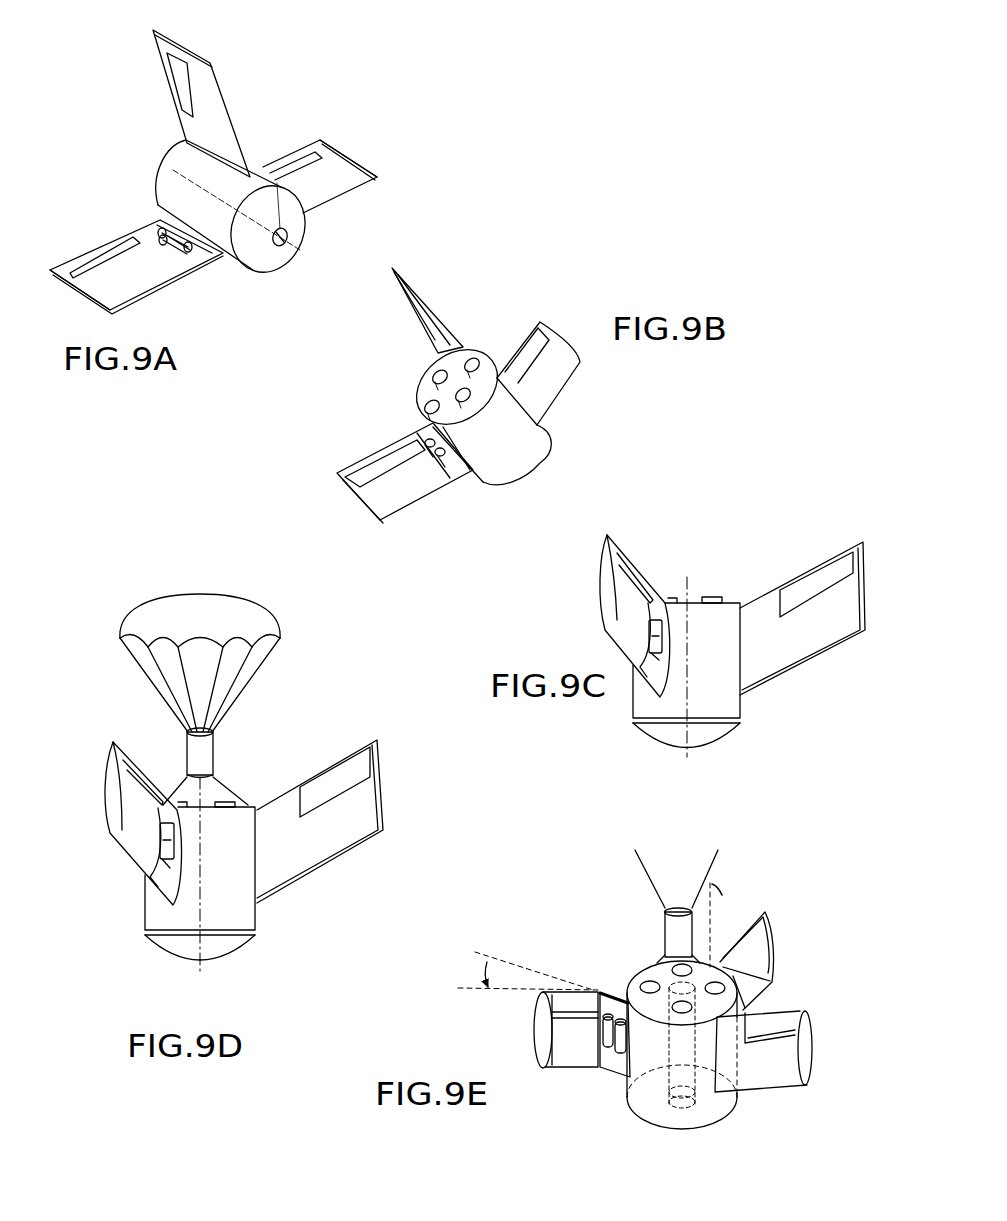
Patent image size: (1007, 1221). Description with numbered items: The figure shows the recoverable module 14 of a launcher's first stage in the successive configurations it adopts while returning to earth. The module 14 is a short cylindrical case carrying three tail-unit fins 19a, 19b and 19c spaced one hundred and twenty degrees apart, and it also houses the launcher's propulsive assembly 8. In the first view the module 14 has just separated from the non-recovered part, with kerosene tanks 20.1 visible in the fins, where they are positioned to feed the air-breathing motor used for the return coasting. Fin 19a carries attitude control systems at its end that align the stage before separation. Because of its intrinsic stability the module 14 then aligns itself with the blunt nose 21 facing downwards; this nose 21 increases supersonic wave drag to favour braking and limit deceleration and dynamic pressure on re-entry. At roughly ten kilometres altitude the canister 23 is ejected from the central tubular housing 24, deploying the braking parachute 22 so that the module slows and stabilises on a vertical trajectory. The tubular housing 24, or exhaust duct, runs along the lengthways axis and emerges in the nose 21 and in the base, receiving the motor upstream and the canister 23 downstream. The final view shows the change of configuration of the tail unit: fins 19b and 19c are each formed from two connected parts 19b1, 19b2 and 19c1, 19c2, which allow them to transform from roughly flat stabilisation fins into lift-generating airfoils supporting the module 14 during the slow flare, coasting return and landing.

In FIG. 9A, the module 14 is at (130, 80).
In FIG. 9B, the module 14 is at (563, 307).
In FIG. 9C, the module 14 is at (753, 542).
In FIG. 9D, the module 14 is at (110, 958).
In FIG. 9E, the module 14 is at (540, 1143).
In FIG. 9A, the fin 19a is at (237, 98).
In FIG. 9B, the fin 19a is at (557, 388).
In FIG. 9C, the fin 19a is at (867, 603).
In FIG. 9D, the fin 19a is at (363, 818).
In FIG. 9E, the fin 19a is at (787, 1078).
In FIG. 9A, the fin 19b is at (373, 163).
In FIG. 9B, the fin 19b is at (447, 297).
In FIG. 9A, the fin 19c is at (97, 233).
In FIG. 9B, the fin 19c is at (370, 445).
In FIG. 9C, the fin 19c is at (637, 557).
In FIG. 9D, the fin 19c is at (110, 735).
In FIG. 9A, the tanks 20.1 is at (197, 243).
In FIG. 9C, the nose 21 is at (703, 733).
In FIG. 9D, the nose 21 is at (218, 948).
In FIG. 9D, the braking parachute 22 is at (165, 615).
In FIG. 9D, the canister 23 is at (205, 752).
In FIG. 9E, the canister 23 is at (670, 938).
In FIG. 9E, the tubular housing 24 is at (693, 1098).
In FIG. 9E, the propulsive assembly 8 is at (647, 983).
In FIG. 9E, the connected part 19b1 is at (723, 967).
In FIG. 9E, the connected part 19b2 is at (760, 940).
In FIG. 9E, the connected part 19c1 is at (613, 1063).
In FIG. 9E, the connected part 19c2 is at (567, 1060).